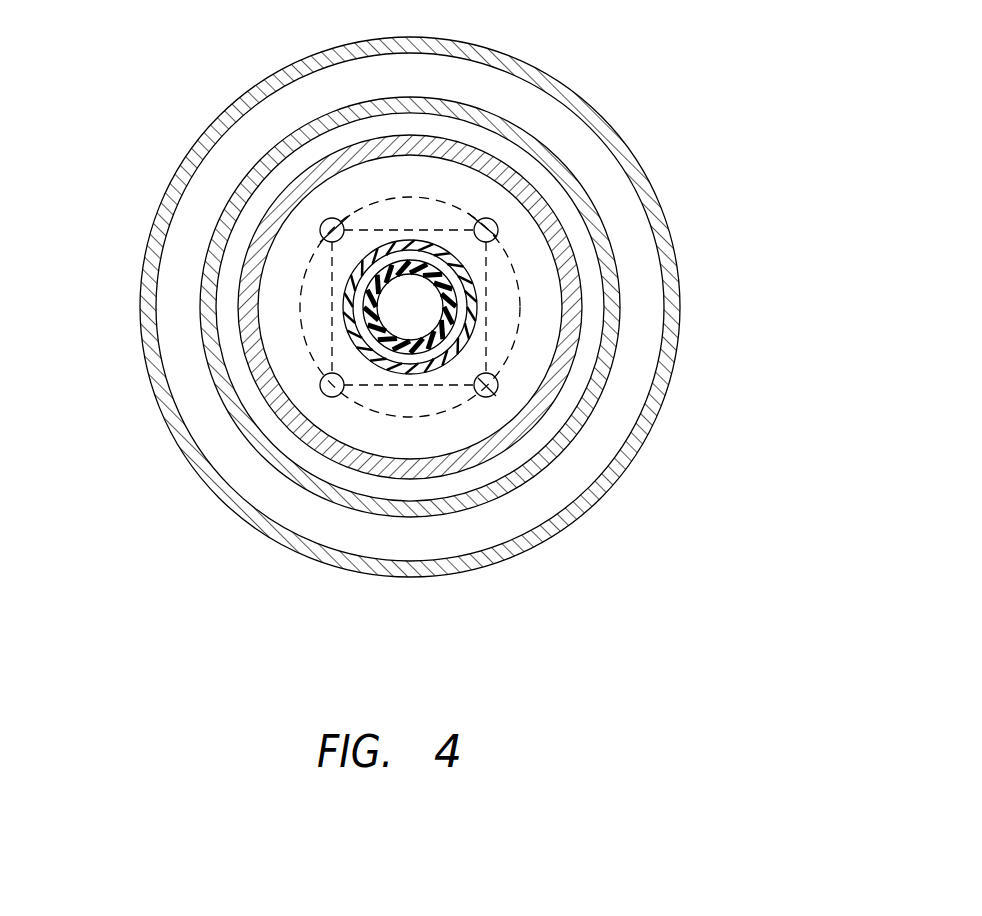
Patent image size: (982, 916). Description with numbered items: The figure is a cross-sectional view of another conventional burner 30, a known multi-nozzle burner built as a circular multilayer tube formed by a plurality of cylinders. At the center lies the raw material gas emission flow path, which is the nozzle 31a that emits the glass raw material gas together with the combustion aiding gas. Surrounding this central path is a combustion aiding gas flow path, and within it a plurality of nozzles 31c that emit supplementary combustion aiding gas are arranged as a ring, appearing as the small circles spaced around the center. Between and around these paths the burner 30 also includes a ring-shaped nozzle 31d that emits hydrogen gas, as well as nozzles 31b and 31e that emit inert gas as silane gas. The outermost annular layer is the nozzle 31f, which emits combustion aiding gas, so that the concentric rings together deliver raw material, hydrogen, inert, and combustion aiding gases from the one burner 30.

The burner 30 is at (573, 92).
The nozzle 31a is at (402, 298).
The nozzle 31b is at (363, 318).
The nozzles 31c is at (320, 385).
The ring-shaped nozzle 31d is at (320, 412).
The nozzle 31e is at (302, 453).
The nozzle 31f is at (307, 510).